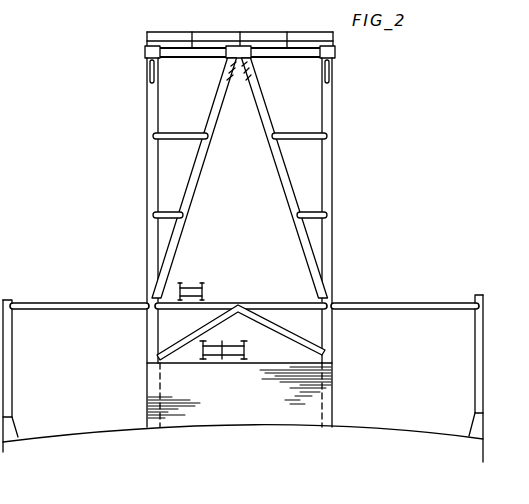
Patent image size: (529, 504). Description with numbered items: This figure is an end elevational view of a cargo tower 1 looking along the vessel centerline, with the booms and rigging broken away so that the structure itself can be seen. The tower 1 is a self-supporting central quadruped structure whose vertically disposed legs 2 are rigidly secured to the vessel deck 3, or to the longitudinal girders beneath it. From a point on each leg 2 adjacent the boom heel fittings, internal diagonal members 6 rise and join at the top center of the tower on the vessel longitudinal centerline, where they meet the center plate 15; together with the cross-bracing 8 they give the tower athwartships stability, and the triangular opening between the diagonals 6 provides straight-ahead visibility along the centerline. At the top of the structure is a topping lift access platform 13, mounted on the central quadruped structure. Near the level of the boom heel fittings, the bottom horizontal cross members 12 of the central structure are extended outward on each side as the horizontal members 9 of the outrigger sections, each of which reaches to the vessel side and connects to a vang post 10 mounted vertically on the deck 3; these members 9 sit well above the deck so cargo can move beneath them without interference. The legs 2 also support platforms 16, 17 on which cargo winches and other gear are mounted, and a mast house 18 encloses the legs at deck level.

The tower 1 is at (341, 91).
The legs 2 is at (152, 153).
The vessel deck 3 is at (67, 432).
The internal diagonal members 6 is at (197, 173).
The cross-bracing 8 is at (172, 136).
The horizontal members 9 is at (90, 303).
The vang post 10 is at (7, 368).
The bottom horizontal cross members 12 is at (212, 306).
The topping lift access platform 13 is at (170, 52).
The center plate 15 is at (241, 52).
The platform 16 is at (301, 295).
The platform 17 is at (281, 356).
The mast house 18 is at (250, 404).